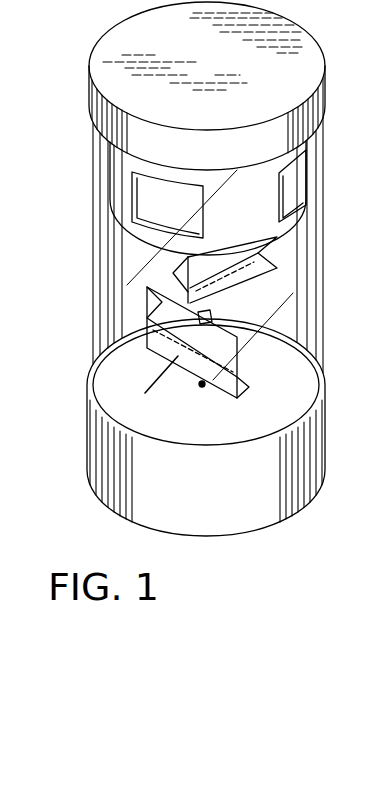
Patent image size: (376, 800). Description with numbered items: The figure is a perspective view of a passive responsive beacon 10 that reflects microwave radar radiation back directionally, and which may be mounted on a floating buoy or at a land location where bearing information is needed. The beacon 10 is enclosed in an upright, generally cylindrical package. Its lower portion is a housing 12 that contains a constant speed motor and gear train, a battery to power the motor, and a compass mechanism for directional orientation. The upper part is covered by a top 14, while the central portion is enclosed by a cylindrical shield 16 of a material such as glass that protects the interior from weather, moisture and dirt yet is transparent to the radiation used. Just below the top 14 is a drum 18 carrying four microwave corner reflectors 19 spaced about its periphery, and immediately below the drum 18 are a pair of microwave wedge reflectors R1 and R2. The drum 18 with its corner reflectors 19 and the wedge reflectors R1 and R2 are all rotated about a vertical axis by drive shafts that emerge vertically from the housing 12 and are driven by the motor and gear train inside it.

The beacon 10 is at (363, 27).
The housing 12 is at (299, 498).
The top 14 is at (105, 33).
The cylindrical shield 16 is at (93, 292).
The drum 18 is at (110, 206).
The microwave corner reflectors 19 is at (188, 221).
The microwave wedge reflector R1 is at (257, 267).
The microwave wedge reflector R2 is at (170, 351).